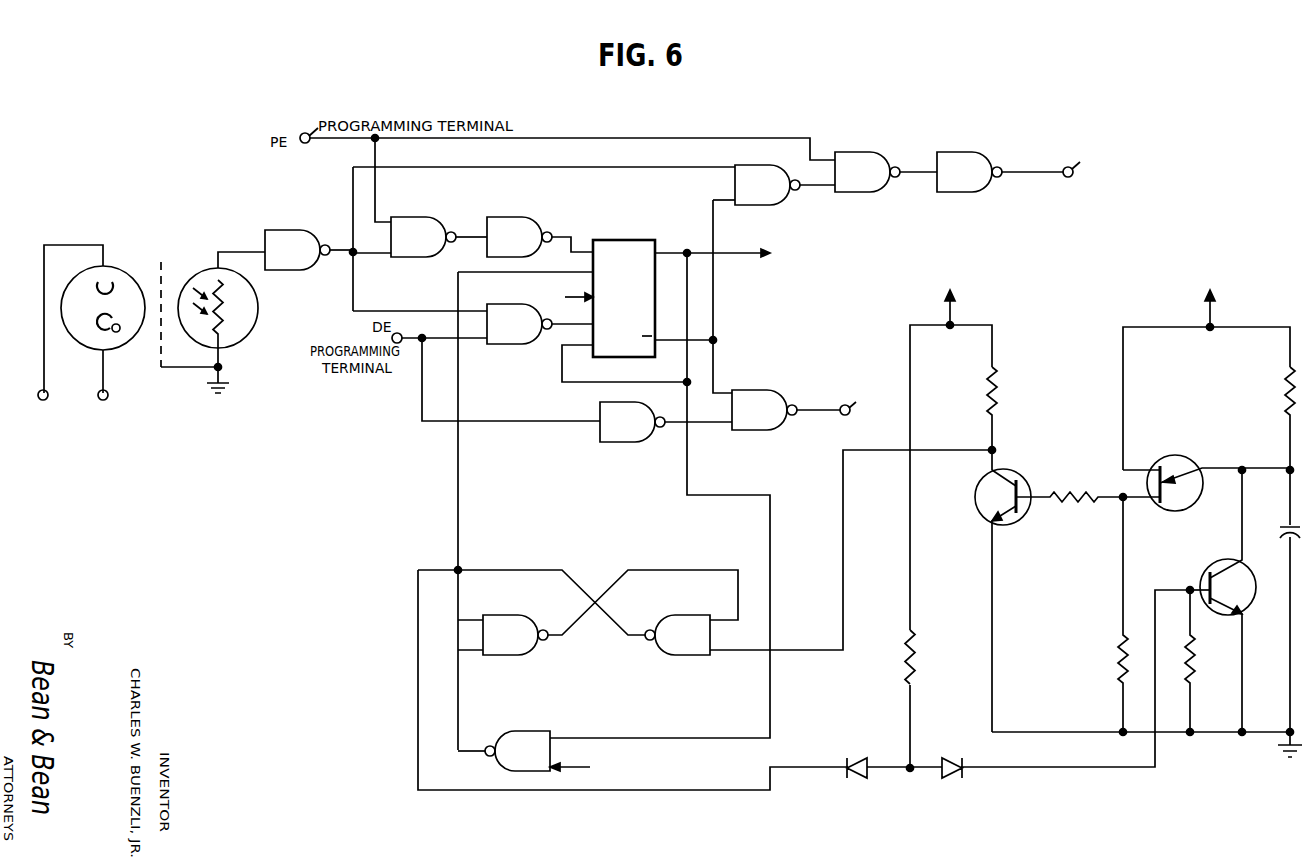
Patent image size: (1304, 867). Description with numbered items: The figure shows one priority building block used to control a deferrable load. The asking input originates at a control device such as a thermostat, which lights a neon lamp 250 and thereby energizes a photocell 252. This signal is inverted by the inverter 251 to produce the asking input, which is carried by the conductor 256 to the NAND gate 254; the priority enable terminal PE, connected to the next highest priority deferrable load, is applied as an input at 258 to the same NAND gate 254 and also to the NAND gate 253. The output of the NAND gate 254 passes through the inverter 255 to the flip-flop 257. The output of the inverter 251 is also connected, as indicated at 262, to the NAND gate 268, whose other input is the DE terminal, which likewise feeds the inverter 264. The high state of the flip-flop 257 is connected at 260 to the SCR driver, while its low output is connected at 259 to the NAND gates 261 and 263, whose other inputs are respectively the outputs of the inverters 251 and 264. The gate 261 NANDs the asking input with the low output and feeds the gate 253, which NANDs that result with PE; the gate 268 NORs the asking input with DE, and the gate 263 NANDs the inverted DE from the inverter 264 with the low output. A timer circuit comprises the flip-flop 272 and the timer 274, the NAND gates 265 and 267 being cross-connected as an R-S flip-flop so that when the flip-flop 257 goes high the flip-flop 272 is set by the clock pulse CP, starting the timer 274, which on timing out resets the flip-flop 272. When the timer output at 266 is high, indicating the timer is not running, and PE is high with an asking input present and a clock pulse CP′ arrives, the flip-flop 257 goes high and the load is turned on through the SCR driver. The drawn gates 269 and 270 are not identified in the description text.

The neon lamp 250 is at (126, 270).
The inverter 251 is at (288, 230).
The photocell 252 is at (258, 308).
The NAND gate 253 is at (869, 152).
The NAND gate 254 is at (424, 218).
The inverter 255 is at (519, 218).
The conductor 256 is at (375, 258).
The flip-flop 257 is at (652, 240).
The input 258 is at (377, 215).
The low output connection 259 is at (716, 356).
The SCR driver connection 260 is at (751, 252).
The NAND gate 261 is at (766, 165).
The connection of inverter output 262 is at (1033, 174).
The NAND gate 263 is at (763, 390).
The inverter 264 is at (605, 440).
The NAND gate 265 is at (515, 615).
The timer output 266 is at (435, 310).
The NAND gate 267 is at (693, 616).
The NAND gate 268 is at (525, 345).
The NAND gate 269 is at (962, 152).
The conductor to DC programming terminal 270 is at (822, 413).
The flip-flop 272 is at (705, 531).
The timer 274 is at (1043, 390).